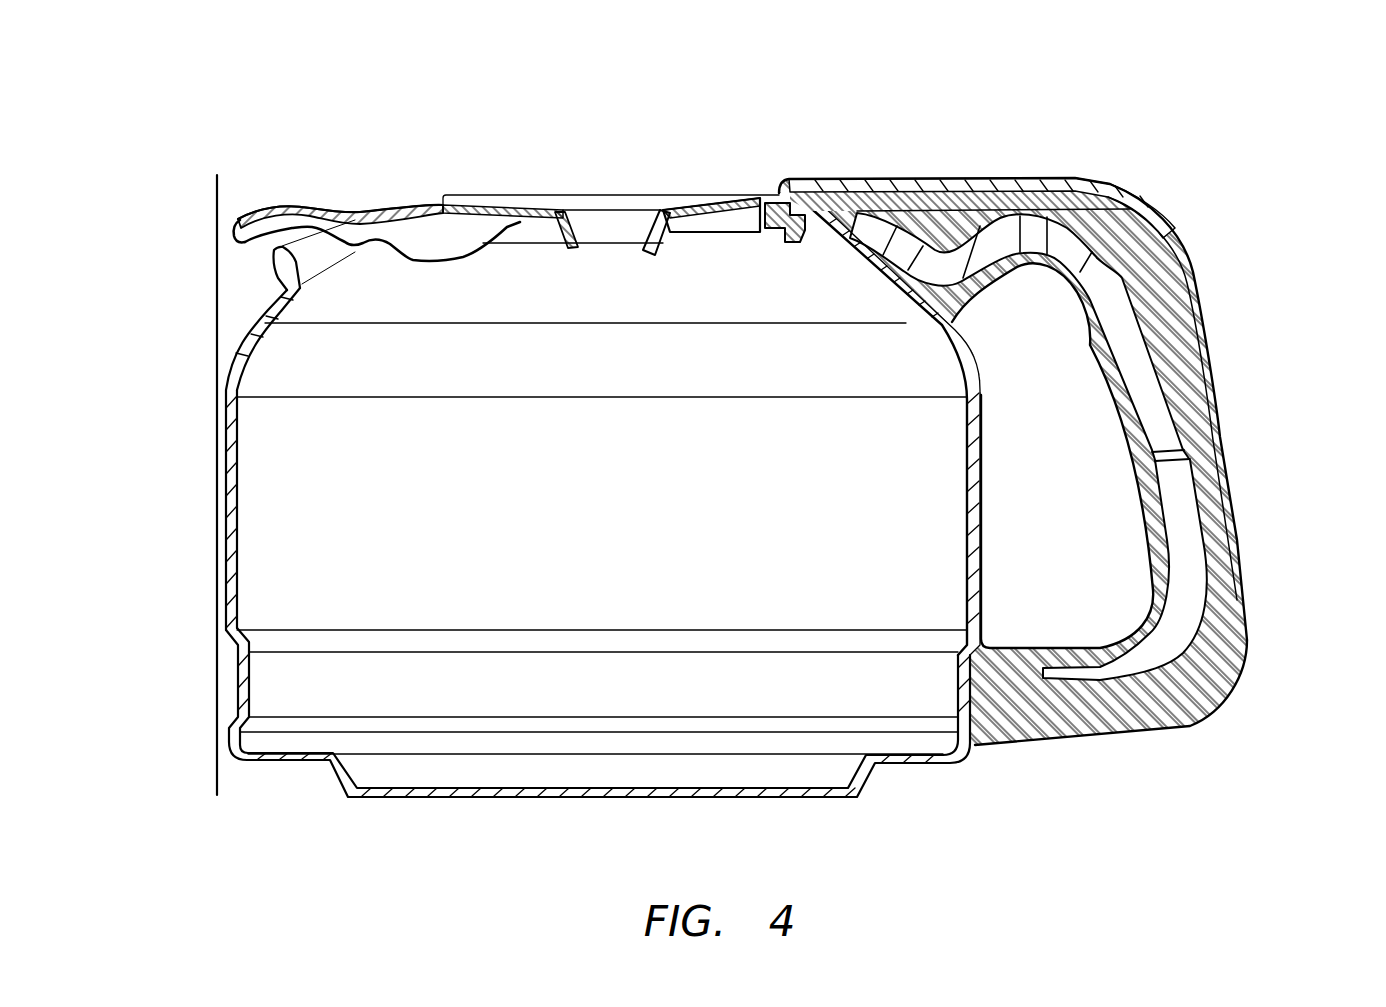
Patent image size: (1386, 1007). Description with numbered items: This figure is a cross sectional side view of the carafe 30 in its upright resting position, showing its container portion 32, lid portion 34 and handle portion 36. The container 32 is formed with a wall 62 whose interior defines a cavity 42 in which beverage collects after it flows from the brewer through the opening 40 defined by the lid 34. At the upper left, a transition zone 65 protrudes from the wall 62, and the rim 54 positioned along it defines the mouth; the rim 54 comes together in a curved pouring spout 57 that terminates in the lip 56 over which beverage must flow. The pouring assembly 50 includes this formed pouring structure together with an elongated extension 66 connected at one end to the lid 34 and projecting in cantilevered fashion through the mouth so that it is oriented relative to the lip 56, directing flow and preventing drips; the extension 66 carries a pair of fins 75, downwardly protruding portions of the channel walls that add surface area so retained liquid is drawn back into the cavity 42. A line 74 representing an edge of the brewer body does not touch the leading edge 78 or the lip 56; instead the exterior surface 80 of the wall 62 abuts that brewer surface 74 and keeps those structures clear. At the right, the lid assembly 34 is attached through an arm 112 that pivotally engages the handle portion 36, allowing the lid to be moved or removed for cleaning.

The carafe 30 is at (1081, 131).
The container portion 32 is at (203, 462).
The lid portion 34 is at (669, 166).
The handle portion 36 is at (1252, 496).
The opening 40 is at (600, 193).
The cavity 42 is at (335, 550).
The pouring assembly 50 is at (293, 164).
The rim 54 is at (375, 198).
The lip 56 is at (263, 253).
The pouring spout 57 is at (269, 275).
The wall 62 is at (236, 610).
The transition zone 65 is at (321, 250).
The extension 66 is at (272, 204).
The line representing an edge of a brewer body 74 is at (236, 768).
The fins 75 is at (355, 263).
The leading edge 78 is at (237, 224).
The exterior surface 80 is at (226, 507).
The arm 112 is at (920, 178).